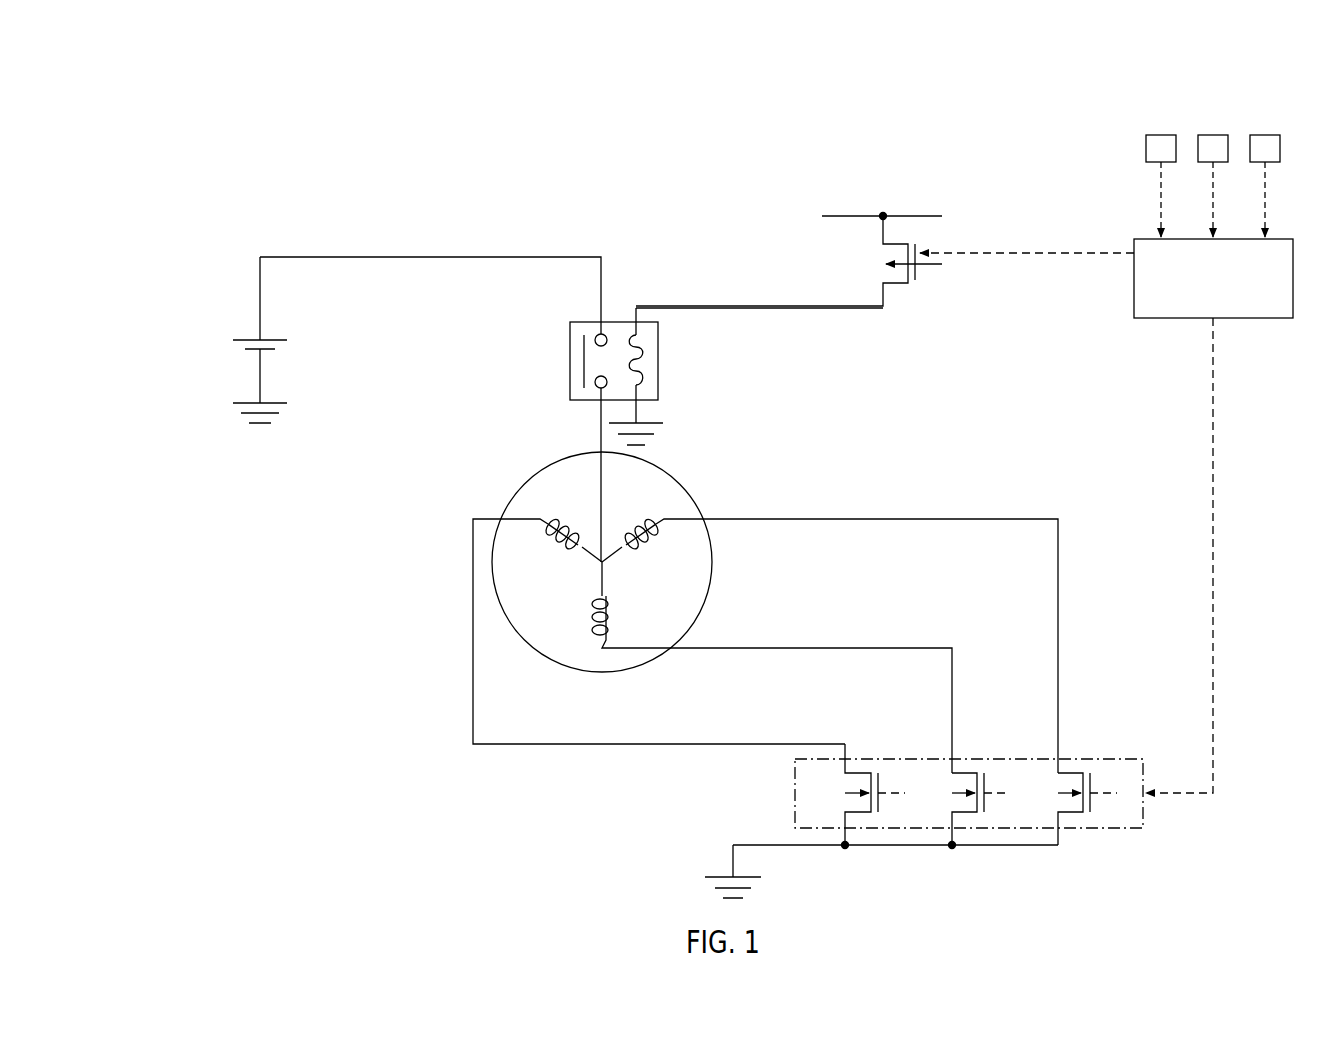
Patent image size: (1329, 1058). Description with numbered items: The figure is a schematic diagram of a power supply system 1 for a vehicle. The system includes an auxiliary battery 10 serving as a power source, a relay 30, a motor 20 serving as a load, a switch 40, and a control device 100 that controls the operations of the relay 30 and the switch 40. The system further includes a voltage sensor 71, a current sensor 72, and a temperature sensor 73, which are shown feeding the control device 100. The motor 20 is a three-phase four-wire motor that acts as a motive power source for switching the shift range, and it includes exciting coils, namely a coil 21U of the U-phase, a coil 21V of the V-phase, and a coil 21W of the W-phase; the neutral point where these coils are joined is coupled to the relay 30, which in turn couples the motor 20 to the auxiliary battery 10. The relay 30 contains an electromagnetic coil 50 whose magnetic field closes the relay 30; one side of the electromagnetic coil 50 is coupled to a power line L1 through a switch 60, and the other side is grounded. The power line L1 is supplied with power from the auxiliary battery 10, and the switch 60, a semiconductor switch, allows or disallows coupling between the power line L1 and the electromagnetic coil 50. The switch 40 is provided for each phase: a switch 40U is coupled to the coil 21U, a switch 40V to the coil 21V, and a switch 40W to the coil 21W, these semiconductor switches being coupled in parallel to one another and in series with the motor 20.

The power supply system 1 is at (140, 68).
The auxiliary battery 10 is at (244, 338).
The motor 20 is at (724, 596).
The coil of the U-phase 21U is at (655, 545).
The coil of the V-phase 21V is at (612, 610).
The coil of the W-phase 21W is at (548, 544).
The relay 30 is at (570, 361).
The switch 40 is at (926, 826).
The switch 40U is at (1092, 814).
The switch 40V is at (986, 814).
The switch 40W is at (880, 814).
The electromagnetic coil 50 is at (658, 361).
The switch 60 is at (918, 278).
The voltage sensor 71 is at (1160, 132).
The current sensor 72 is at (1212, 132).
The temperature sensor 73 is at (1264, 132).
The control device 100 is at (1266, 321).
The power line L1 is at (840, 214).